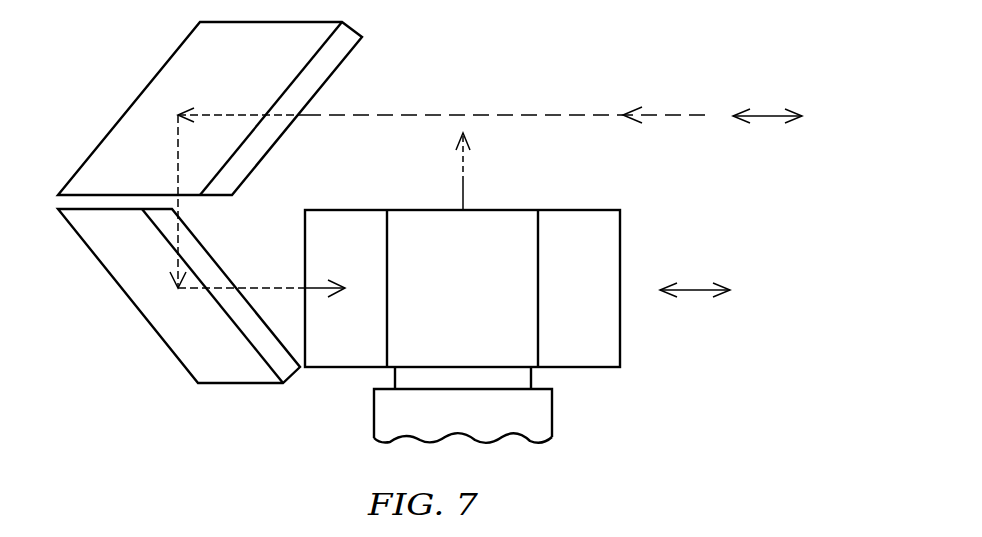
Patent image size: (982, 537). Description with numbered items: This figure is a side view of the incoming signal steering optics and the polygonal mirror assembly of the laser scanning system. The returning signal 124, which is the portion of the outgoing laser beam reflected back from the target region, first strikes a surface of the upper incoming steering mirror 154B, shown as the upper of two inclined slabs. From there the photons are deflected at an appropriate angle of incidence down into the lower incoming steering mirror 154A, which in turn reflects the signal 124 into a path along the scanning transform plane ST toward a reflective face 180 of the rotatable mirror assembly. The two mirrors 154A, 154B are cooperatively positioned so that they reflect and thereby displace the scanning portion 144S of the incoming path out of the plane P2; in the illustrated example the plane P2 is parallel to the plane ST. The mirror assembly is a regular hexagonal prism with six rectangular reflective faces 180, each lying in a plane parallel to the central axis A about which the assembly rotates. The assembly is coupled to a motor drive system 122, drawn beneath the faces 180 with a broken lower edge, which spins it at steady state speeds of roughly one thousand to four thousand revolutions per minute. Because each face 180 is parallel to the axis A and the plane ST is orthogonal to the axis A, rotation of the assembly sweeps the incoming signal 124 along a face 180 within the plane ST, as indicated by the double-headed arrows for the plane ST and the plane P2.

The upper incoming steering mirror 154B is at (128, 108).
The lower incoming steering mirror 154A is at (128, 295).
The scanning portion of the incoming path 144S is at (442, 115).
The signal 124 is at (271, 288).
The reflective face 180 is at (362, 335).
The motor drive system 122 is at (373, 412).
The central axis A is at (462, 182).
The plane P2 is at (767, 115).
The scanning transform plane ST is at (695, 290).